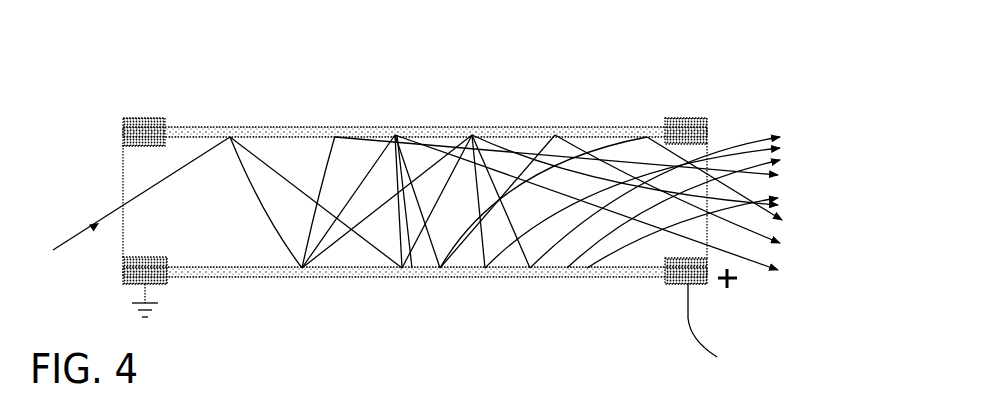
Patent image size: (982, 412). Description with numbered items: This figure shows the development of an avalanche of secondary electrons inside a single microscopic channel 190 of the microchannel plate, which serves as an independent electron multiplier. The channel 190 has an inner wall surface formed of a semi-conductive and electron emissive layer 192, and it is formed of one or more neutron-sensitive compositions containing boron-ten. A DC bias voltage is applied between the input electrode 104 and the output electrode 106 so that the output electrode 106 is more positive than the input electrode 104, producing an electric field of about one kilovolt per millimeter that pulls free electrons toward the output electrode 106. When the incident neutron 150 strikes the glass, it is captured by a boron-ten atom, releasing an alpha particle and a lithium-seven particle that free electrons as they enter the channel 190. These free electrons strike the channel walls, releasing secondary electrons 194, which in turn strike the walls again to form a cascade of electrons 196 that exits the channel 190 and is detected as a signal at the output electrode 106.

The input electrode 104 is at (128, 117).
The output electrode 106 is at (688, 302).
The incident neutron 150 is at (127, 193).
The channel 190 is at (367, 277).
The semi-conductive and electron emissive layer 192 is at (525, 127).
The secondary electrons 194 is at (278, 168).
The cascade of electrons 196 is at (572, 162).